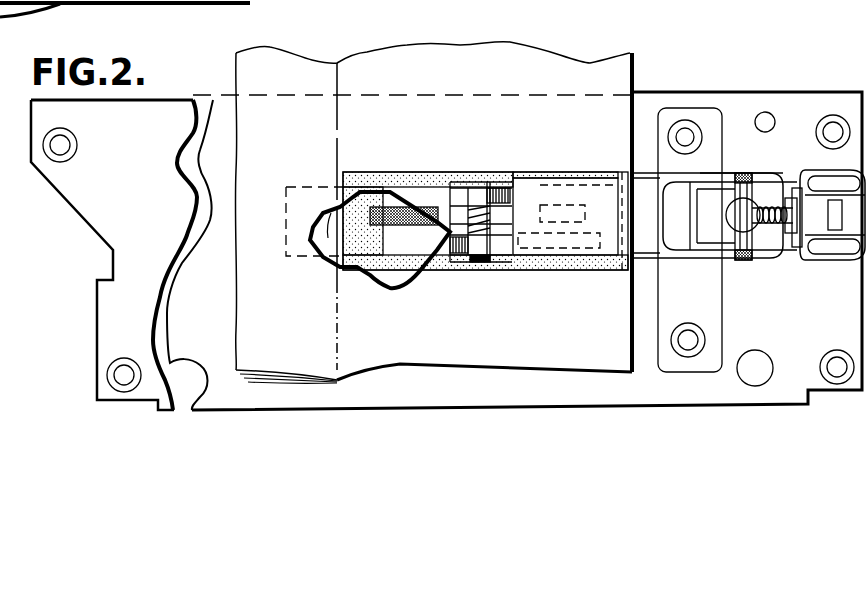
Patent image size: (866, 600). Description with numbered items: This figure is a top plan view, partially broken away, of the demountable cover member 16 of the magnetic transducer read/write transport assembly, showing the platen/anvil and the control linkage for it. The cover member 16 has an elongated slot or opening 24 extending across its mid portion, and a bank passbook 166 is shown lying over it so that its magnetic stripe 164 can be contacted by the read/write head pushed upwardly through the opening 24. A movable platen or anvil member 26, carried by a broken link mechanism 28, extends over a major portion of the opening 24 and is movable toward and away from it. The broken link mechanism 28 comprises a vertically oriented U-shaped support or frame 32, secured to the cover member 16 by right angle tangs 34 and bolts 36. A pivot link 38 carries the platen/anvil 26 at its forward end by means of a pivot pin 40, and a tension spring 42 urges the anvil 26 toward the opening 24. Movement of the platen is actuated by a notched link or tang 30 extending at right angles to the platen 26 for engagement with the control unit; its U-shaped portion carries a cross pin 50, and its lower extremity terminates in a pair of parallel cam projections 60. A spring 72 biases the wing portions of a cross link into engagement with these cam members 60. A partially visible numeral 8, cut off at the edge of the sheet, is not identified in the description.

The base plate 8 is at (106, 255).
The bolts 36 is at (722, 332).
The bank passbook 166 is at (442, 80).
The magnetic stripe 164 is at (398, 227).
The elongated slot or opening 24 is at (290, 242).
The movable platen or anvil member 26 is at (469, 270).
The pivot pin 40 is at (478, 268).
The tension spring 42 is at (515, 178).
The pivot link 38 is at (533, 178).
The U-shaped support or frame 32 is at (670, 168).
The notched link or tang 30 is at (692, 218).
The cover member 16 is at (740, 90).
The broken link mechanism 28 is at (728, 168).
The cam projections 60 is at (767, 180).
The cross pin 50 is at (738, 227).
The right angle tangs 34 is at (708, 295).
The spring 72 is at (797, 243).